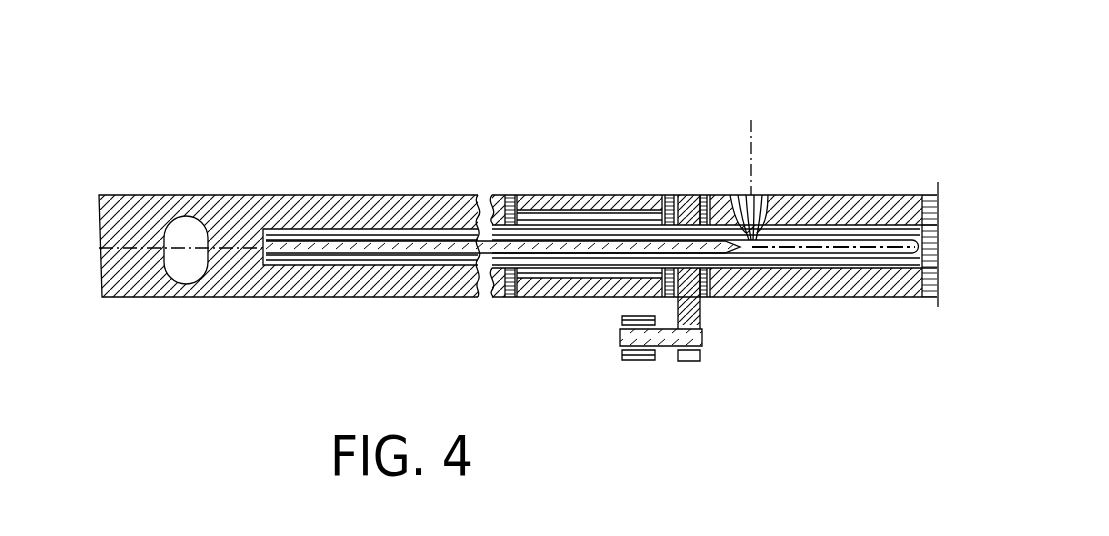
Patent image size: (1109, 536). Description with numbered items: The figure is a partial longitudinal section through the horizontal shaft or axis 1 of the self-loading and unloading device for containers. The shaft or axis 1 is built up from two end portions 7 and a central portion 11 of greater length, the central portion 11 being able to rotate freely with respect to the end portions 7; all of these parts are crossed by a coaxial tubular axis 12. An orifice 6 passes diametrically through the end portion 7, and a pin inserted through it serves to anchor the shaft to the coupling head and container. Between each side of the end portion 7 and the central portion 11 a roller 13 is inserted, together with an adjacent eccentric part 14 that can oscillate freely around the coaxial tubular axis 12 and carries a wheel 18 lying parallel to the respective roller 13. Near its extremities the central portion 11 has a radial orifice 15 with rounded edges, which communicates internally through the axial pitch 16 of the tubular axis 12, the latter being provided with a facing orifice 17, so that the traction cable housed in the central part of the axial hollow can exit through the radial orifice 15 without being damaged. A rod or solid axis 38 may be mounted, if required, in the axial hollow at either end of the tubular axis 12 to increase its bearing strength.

The shaft or axis 1 is at (347, 153).
The orifice 6 is at (182, 238).
The end portion 7 is at (238, 198).
The central portion 11 is at (865, 303).
The tubular axis 12 is at (407, 232).
The roller 13 is at (558, 205).
The eccentric part 14 is at (688, 358).
The radial orifice 15 is at (758, 205).
The axial pitch 16 is at (892, 223).
The orifice 17 is at (768, 228).
The wheel 18 is at (627, 362).
The rod or solid axis 38 is at (315, 252).